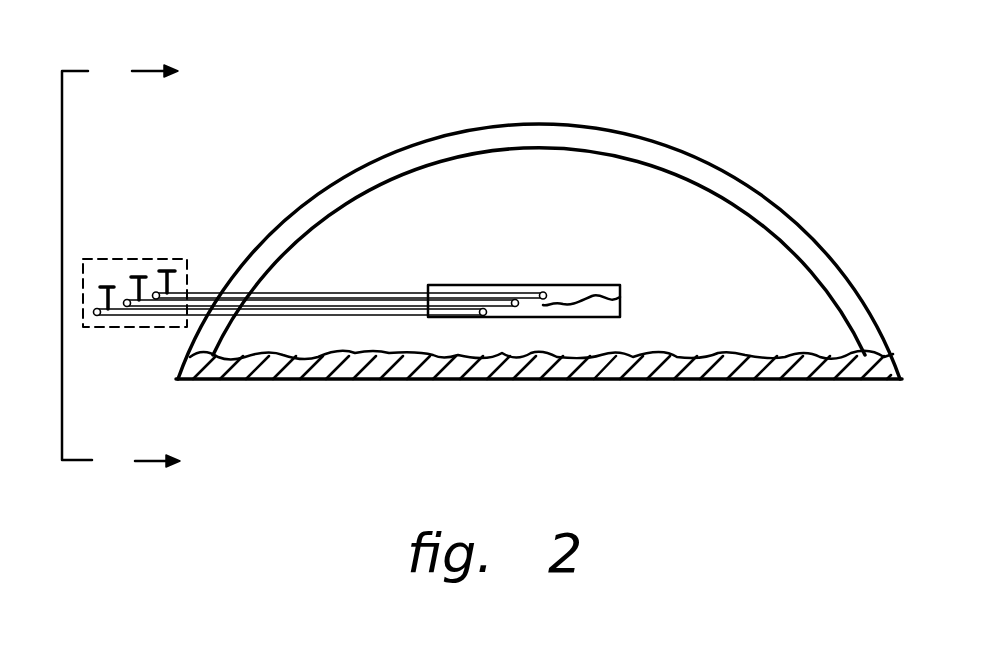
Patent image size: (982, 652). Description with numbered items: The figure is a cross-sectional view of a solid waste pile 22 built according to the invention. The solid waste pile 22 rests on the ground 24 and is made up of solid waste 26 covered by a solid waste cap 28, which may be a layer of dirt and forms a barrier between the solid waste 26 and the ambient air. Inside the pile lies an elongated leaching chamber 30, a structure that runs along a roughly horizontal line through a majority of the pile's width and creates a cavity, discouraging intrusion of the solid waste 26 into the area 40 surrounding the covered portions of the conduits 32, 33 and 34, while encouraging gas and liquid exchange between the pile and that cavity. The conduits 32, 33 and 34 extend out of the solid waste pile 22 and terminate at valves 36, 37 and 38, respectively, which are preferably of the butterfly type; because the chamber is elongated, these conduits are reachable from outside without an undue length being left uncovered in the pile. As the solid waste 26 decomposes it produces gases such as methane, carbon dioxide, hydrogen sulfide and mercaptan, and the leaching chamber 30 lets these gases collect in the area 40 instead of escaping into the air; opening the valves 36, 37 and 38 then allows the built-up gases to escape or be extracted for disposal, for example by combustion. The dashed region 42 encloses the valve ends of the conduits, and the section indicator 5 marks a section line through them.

The solid waste pile 22 is at (648, 115).
The ground 24 is at (764, 384).
The solid waste 26 is at (423, 195).
The solid waste cap 28 is at (448, 153).
The elongated leaching chamber 30 is at (518, 284).
The conduit 32 is at (620, 299).
The conduit 33 is at (498, 319).
The conduit 34 is at (347, 320).
The valve 36 is at (174, 270).
The valve 37 is at (138, 277).
The valve 38 is at (103, 289).
The area 40 is at (554, 302).
The connector region 42 is at (110, 258).
The section line 5- 5 is at (121, 265).